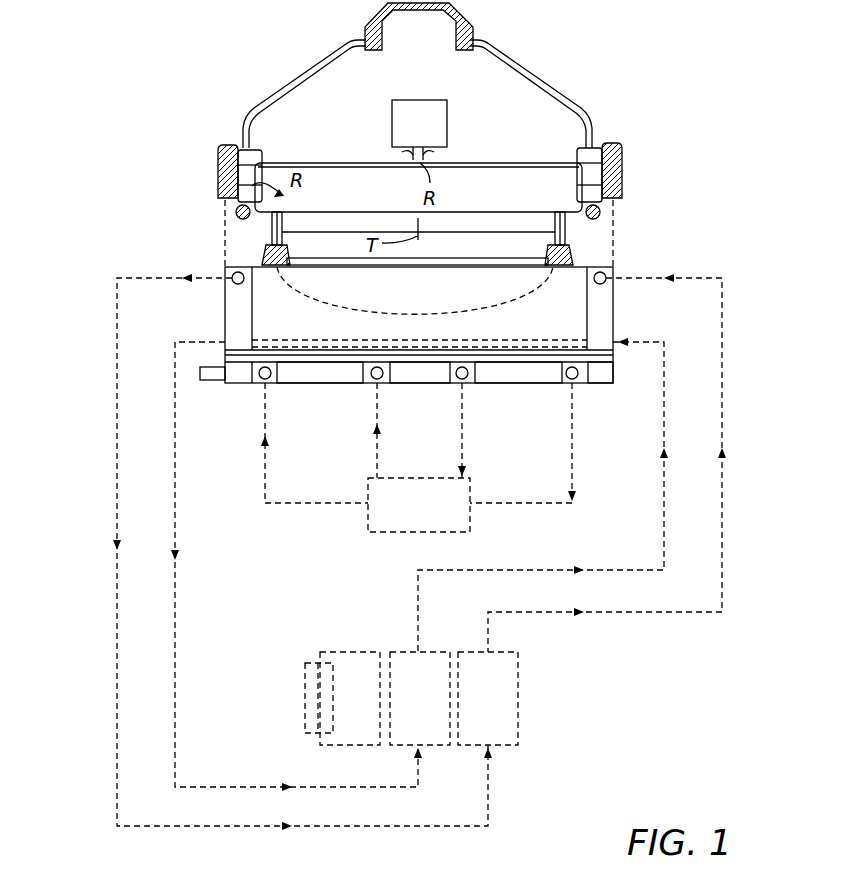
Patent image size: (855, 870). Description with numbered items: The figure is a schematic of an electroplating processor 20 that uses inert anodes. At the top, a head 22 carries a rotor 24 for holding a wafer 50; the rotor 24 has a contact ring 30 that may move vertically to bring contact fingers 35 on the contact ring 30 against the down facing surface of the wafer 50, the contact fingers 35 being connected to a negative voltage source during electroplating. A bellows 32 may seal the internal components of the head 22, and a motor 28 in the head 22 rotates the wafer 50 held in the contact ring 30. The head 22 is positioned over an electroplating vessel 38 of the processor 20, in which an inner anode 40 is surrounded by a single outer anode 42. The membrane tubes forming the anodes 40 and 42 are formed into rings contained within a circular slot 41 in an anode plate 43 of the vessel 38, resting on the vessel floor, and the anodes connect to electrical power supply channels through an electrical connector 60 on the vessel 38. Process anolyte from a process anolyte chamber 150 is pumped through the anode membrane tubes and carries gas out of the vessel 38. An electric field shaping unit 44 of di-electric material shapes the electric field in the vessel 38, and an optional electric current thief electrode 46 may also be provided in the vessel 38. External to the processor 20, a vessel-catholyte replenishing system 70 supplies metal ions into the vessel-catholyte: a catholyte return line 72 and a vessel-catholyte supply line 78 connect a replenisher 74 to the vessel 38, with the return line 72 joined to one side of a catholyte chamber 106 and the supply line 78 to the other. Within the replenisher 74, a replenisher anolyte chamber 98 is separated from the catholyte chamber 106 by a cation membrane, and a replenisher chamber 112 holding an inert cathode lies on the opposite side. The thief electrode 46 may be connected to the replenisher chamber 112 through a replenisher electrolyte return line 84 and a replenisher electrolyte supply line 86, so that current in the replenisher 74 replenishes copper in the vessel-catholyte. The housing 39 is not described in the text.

The electroplating processor 20 is at (645, 154).
The head 22 is at (547, 70).
The rotor 24 is at (258, 227).
The motor 28 is at (443, 118).
The contact ring 30 is at (577, 260).
The bellows 32 is at (282, 218).
The contact fingers 35 is at (325, 268).
The electroplating vessel 38 is at (420, 278).
The housing 39 is at (243, 263).
The inner anode 40 is at (462, 380).
The circular slot 41 is at (570, 362).
The outer anode 42 is at (570, 383).
The anode plate 43 is at (597, 385).
The electric field shaping unit 44 is at (277, 328).
The electric current thief electrode 46 is at (605, 283).
The wafer 50 is at (567, 231).
The electrical connector 60 is at (200, 373).
The vessel-catholyte replenishing system 70 is at (560, 710).
The catholyte return line 72 is at (182, 660).
The replenisher 74 is at (518, 680).
The vessel-catholyte supply line 78 is at (664, 515).
The replenisher electrolyte return line 84 is at (117, 657).
The replenisher electrolyte supply line 86 is at (722, 342).
The replenisher anolyte chamber 98 is at (357, 667).
The catholyte chamber 106 is at (425, 722).
The replenisher chamber 112 is at (500, 735).
The process anolyte chamber 150 is at (353, 522).